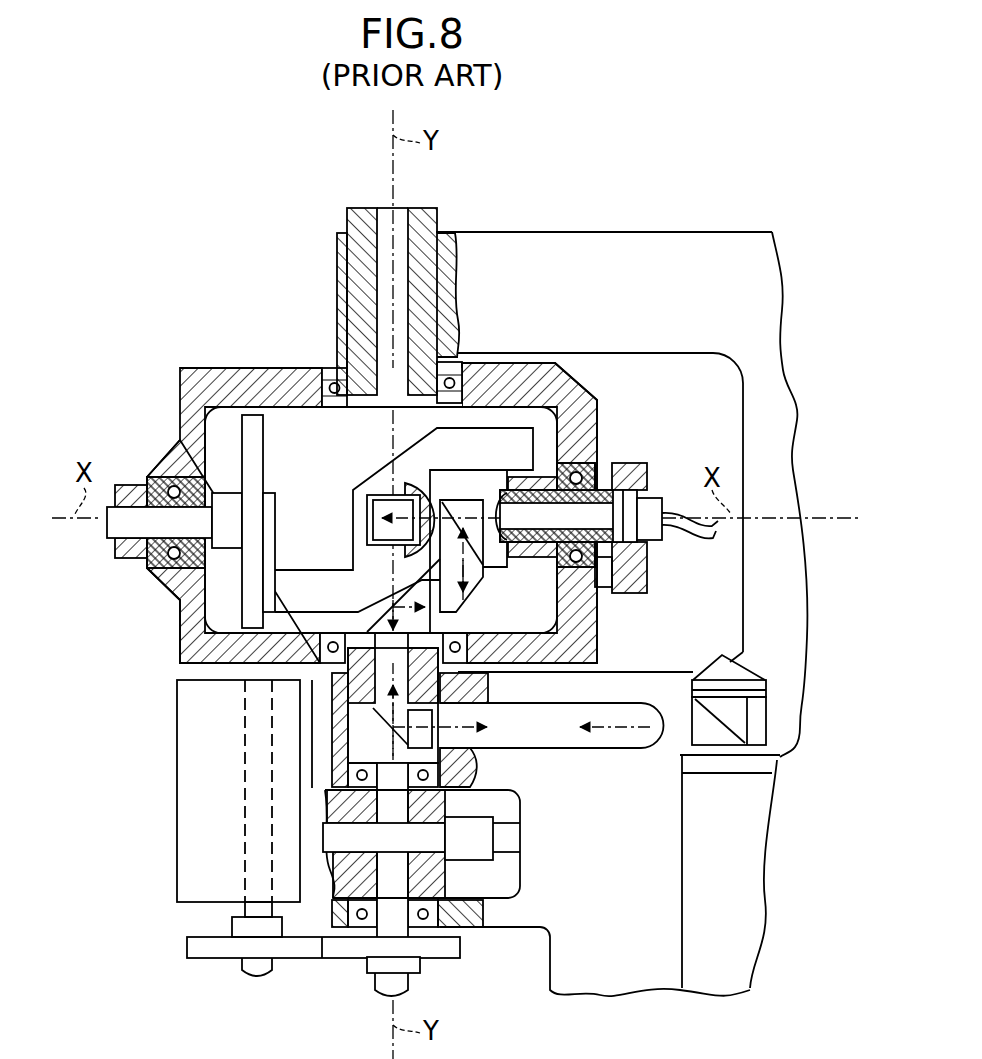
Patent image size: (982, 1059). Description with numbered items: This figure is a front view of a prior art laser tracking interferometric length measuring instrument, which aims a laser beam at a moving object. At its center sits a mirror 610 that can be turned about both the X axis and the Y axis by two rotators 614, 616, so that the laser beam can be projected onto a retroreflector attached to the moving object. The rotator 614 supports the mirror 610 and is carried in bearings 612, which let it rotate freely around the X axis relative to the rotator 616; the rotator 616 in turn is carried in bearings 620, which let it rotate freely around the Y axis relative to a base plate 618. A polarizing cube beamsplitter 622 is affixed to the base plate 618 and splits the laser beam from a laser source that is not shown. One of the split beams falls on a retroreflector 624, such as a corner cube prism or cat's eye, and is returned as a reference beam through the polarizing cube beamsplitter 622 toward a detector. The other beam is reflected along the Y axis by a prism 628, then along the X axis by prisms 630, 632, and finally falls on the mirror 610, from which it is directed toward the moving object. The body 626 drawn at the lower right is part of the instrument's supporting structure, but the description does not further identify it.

The mirror 610 is at (374, 532).
The bearings 612 is at (167, 474).
The rotator 614 is at (389, 465).
The rotator 616 is at (582, 378).
The base plate 618 is at (652, 232).
The bearings 620 is at (322, 368).
The polarizing cube beamsplitter 622 is at (773, 703).
The retroreflector 624 is at (735, 661).
The base 626 is at (682, 852).
The prism 628 is at (375, 710).
The prism 630 is at (378, 615).
The prism 632 is at (486, 568).